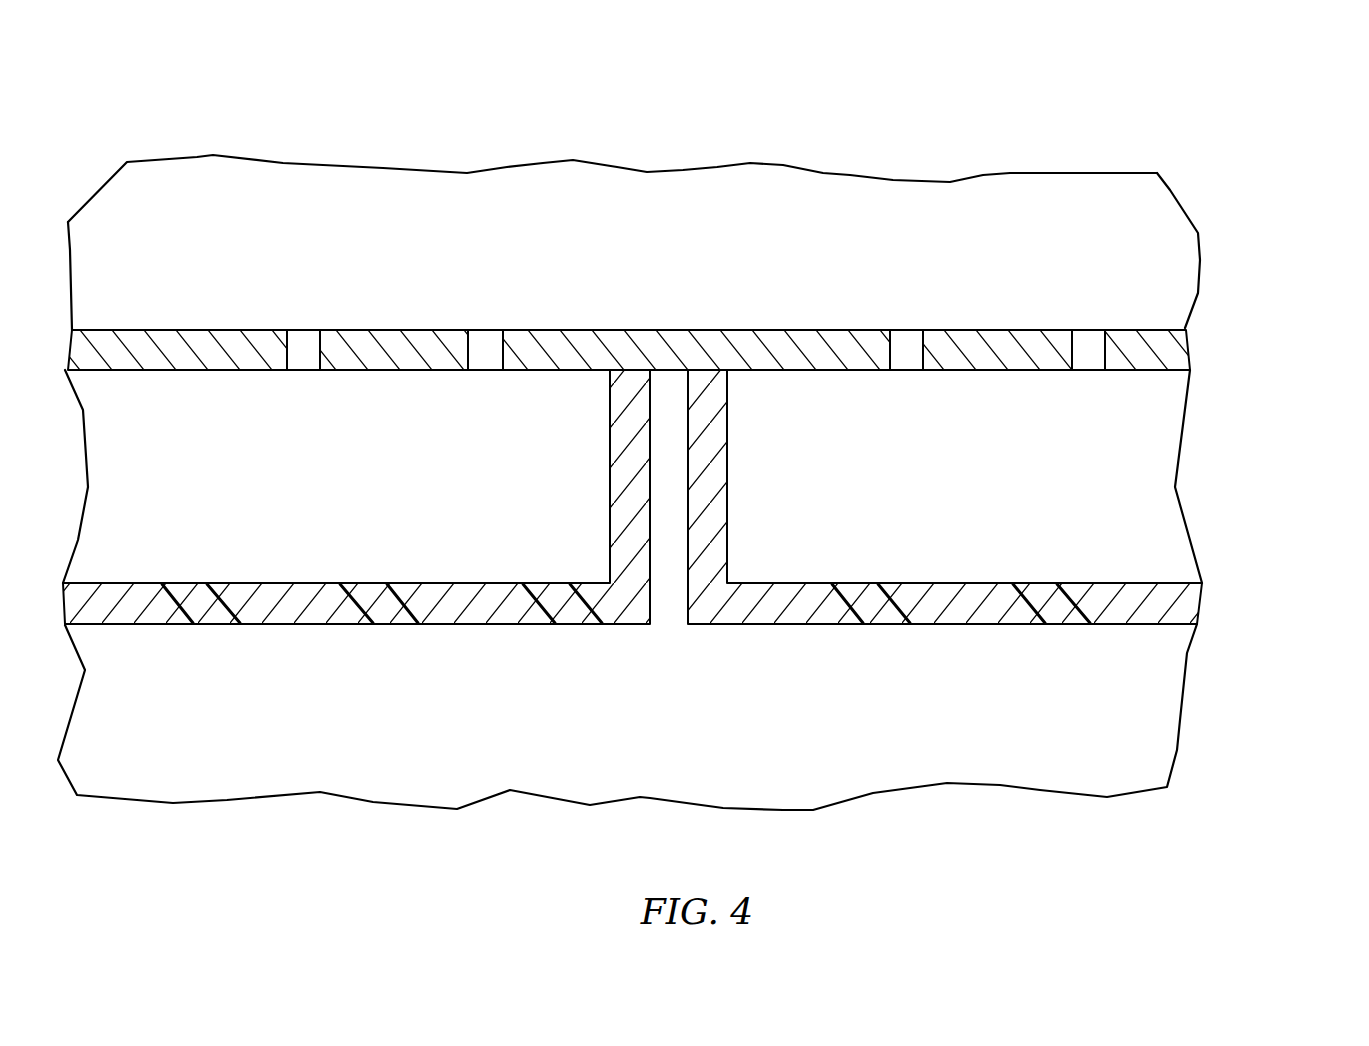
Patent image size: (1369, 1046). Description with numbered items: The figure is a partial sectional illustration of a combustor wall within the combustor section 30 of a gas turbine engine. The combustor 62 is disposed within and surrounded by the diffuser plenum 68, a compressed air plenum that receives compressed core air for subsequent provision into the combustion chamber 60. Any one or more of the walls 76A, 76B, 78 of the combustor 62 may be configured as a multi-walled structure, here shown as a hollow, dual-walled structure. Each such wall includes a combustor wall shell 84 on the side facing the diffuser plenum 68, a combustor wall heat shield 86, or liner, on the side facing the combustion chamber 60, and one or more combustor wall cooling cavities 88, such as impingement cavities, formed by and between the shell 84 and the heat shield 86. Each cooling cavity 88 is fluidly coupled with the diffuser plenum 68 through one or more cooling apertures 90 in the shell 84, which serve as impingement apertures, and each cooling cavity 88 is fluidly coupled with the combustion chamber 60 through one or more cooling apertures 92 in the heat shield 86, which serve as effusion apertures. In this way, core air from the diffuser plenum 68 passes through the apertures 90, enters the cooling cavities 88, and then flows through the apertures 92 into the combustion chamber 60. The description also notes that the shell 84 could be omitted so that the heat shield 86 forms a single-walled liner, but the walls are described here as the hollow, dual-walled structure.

The combustor section 30 is at (1080, 146).
The combustion chamber 60 is at (671, 748).
The combustor 62 is at (1157, 234).
The diffuser plenum 68 is at (654, 254).
The wall 76A is at (1170, 318).
The wall 76B is at (997, 350).
The wall 78 is at (696, 350).
The combustor wall shell 84 is at (710, 302).
The combustor wall heat shield 86 is at (123, 655).
The combustor wall cooling cavity 88 is at (394, 511).
The cooling aperture 90 is at (302, 358).
The cooling aperture 92 is at (213, 613).